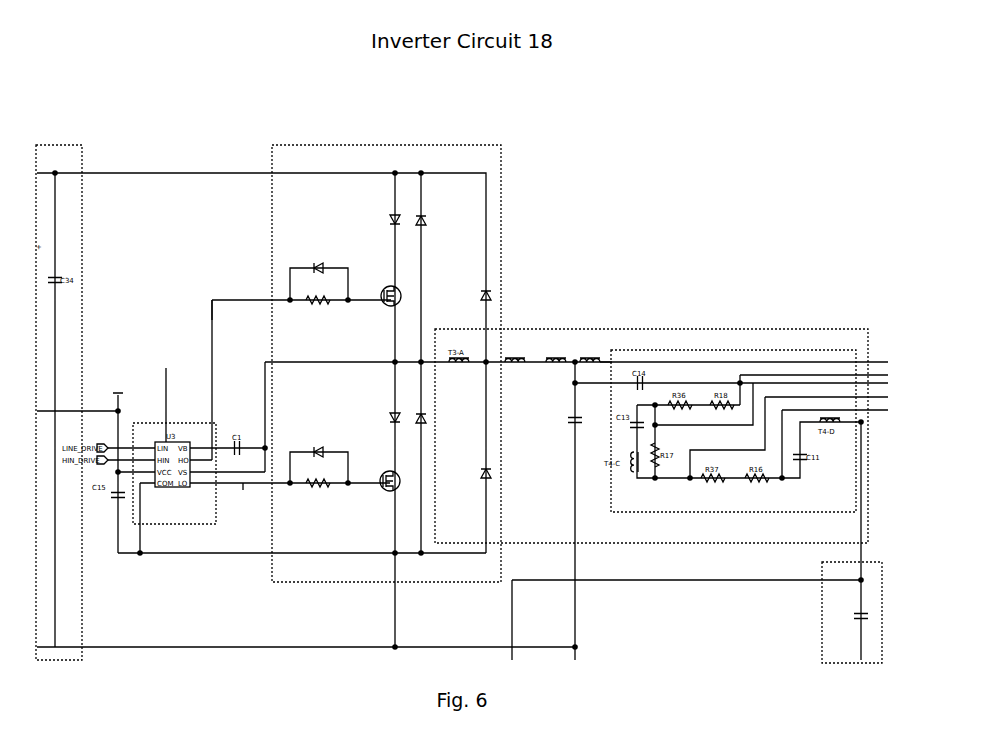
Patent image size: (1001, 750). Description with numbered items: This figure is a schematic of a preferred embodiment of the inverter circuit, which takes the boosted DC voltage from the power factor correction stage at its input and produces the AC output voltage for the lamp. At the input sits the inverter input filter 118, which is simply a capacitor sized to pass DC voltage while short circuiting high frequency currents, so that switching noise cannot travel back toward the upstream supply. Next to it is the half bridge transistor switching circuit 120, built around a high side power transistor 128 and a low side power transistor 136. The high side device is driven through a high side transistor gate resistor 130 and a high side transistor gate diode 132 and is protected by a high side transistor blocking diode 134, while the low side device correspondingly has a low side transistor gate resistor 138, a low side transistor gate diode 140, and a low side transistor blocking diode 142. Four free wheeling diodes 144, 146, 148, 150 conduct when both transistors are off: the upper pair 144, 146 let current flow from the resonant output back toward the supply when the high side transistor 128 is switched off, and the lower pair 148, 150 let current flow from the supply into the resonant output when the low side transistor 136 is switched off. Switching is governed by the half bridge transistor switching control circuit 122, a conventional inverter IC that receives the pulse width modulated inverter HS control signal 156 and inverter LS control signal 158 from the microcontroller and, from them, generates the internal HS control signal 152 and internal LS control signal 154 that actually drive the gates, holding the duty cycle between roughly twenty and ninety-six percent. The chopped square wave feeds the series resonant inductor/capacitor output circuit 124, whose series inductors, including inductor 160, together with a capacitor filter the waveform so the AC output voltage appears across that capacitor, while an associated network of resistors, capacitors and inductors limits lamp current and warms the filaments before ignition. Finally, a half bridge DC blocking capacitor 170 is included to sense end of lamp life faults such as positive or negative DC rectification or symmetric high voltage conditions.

The inverter input filter 118 is at (63, 145).
The half bridge transistor switching circuit 120 is at (501, 215).
The half bridge transistor switching control circuit 122 is at (167, 422).
The series resonant inductor/capacitor output circuit 124 is at (736, 328).
The high side power transistor 128 is at (378, 276).
The high side transistor gate resistor 130 is at (296, 312).
The high side transistor gate diode 132 is at (306, 250).
The high side transistor blocking diode 134 is at (379, 213).
The low side power transistor 136 is at (383, 504).
The low side transistor gate resistor 138 is at (322, 495).
The low side transistor gate diode 140 is at (320, 432).
The low side transistor blocking diode 142 is at (388, 408).
The free wheeling diode 144 is at (436, 212).
The free wheeling diode 146 is at (500, 276).
The free wheeling diode 148 is at (429, 440).
The free wheeling diode 150 is at (512, 470).
The internal HS control signal 152 is at (209, 282).
The internal LS control signal 154 is at (572, 352).
The inverter HS control signal 156 is at (610, 352).
The inverter LS control signal 158 is at (572, 442).
The inductor 160 is at (822, 349).
The half bridge DC blocking capacitor 170 is at (882, 595).